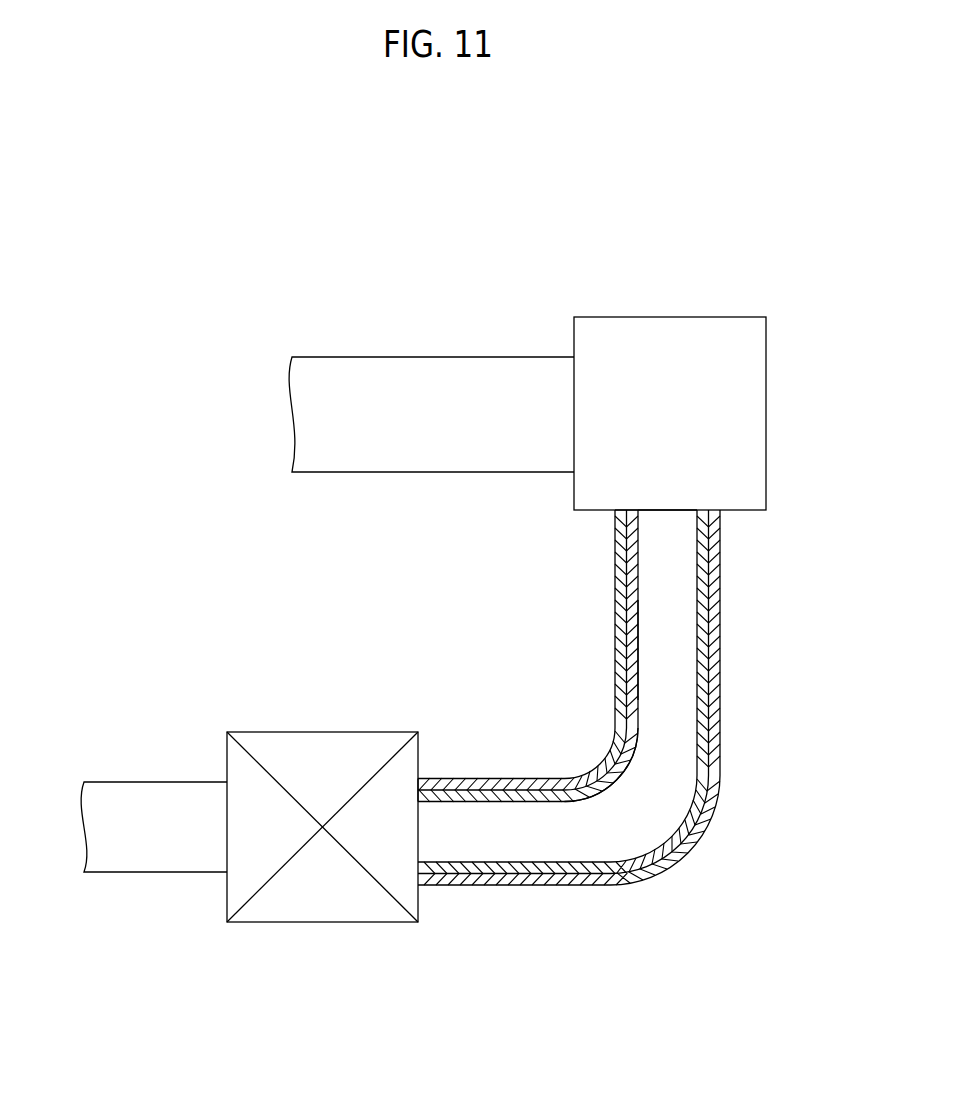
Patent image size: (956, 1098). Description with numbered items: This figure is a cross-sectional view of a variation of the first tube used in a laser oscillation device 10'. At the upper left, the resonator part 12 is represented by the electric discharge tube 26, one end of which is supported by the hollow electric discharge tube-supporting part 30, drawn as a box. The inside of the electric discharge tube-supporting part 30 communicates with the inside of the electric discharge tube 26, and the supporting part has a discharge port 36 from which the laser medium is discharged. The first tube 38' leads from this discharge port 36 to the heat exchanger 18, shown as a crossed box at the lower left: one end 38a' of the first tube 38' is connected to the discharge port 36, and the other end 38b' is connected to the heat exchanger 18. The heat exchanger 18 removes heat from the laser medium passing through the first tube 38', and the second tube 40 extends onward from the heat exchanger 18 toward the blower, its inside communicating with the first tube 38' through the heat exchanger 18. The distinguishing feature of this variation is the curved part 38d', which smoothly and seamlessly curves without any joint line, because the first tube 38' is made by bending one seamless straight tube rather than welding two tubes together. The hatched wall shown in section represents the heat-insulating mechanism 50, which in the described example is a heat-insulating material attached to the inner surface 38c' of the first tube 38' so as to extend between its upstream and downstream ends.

The laser oscillation device 10' is at (449, 584).
The resonator part 12 is at (467, 318).
The heat exchanger 18 is at (315, 923).
The electric discharge tube 26 is at (387, 357).
The electric discharge tube-supporting part 30 is at (693, 317).
The discharge port 36 is at (667, 508).
The first tube 38' is at (597, 742).
The one end of the first tube 38a' is at (580, 539).
The other end of the first tube 38b' is at (445, 750).
The inner surface of the first tube 38c' is at (573, 650).
The curved part 38d' is at (580, 744).
The second tube 40 is at (147, 872).
The heat-insulating mechanism 50 is at (652, 630).